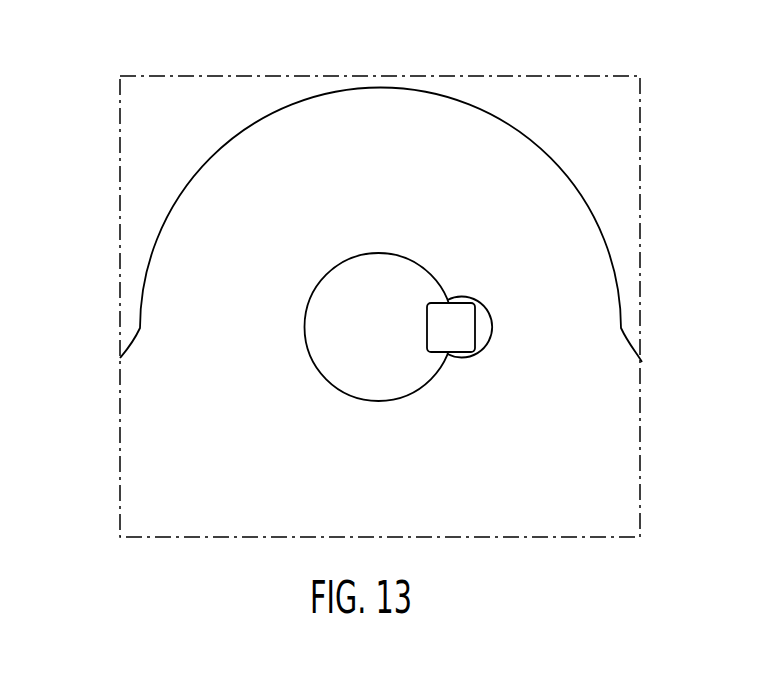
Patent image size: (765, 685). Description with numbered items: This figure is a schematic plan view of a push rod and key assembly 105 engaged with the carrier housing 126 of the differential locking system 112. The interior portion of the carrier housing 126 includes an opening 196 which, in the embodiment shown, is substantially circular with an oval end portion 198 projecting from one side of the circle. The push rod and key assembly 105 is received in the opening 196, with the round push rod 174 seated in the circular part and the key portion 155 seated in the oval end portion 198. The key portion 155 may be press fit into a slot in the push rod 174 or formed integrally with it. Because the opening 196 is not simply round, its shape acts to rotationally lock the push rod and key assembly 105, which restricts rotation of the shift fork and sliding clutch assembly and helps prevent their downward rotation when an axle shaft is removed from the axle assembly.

The differential locking system 112 is at (558, 53).
The carrier housing 126 is at (158, 475).
The push rod 174 is at (372, 288).
The opening 196 is at (433, 382).
The oval end portion 198 is at (480, 327).
The key portion 155 is at (462, 342).
The push rod and key assembly 105 is at (451, 281).